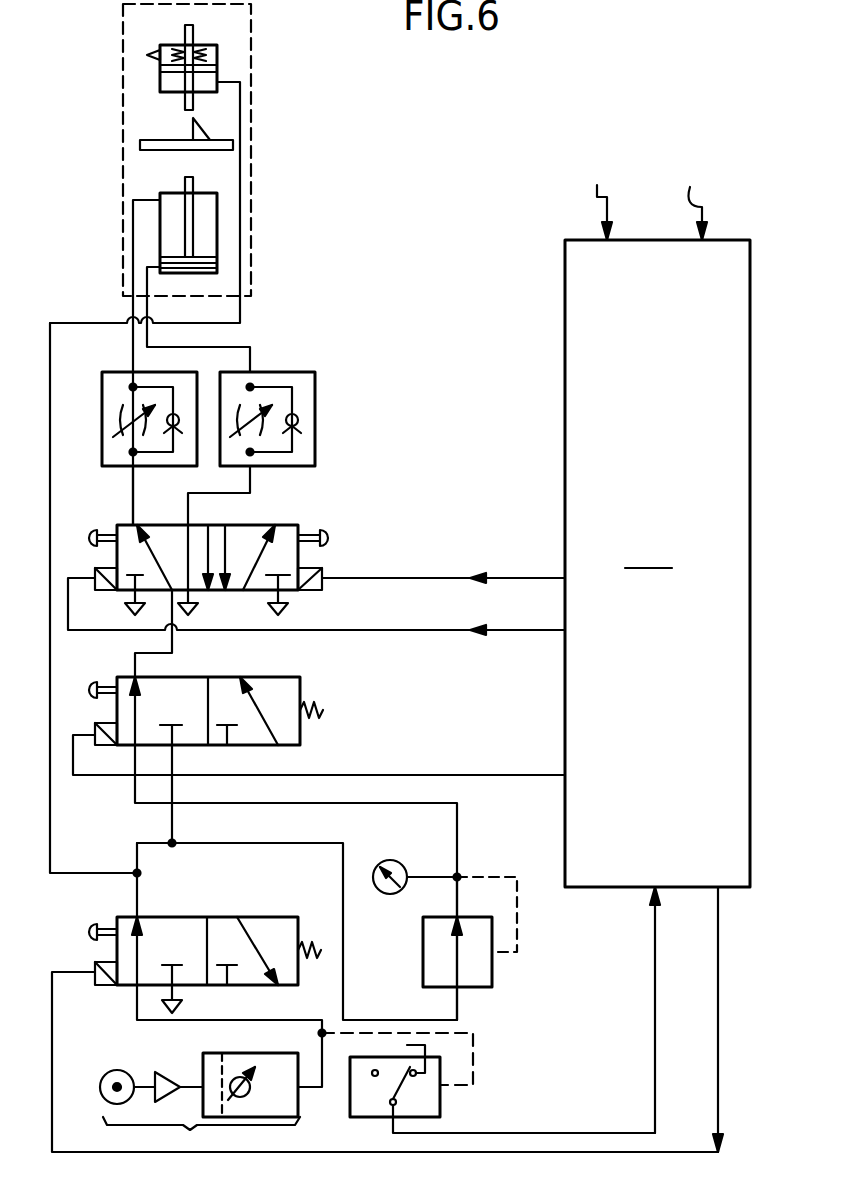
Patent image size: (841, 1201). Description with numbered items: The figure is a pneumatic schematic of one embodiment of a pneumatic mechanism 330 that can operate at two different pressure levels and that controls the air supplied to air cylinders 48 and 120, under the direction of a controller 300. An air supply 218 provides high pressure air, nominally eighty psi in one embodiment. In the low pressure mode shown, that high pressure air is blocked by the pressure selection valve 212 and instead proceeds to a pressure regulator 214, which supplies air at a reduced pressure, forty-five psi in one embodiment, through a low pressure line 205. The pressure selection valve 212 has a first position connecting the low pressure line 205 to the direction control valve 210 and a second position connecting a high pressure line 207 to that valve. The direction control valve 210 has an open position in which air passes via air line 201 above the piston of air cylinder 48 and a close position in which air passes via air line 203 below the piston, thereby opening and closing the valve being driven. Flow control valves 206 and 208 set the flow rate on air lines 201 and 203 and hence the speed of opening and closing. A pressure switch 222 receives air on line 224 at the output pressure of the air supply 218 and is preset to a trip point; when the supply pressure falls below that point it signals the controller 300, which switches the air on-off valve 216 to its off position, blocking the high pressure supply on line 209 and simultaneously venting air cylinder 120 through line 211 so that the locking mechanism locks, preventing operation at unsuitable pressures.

The air cylinder 120 is at (217, 70).
The air cylinder 48 is at (217, 218).
The flow control valve 206 is at (102, 388).
The flow control valve 208 is at (315, 388).
The air line 201 is at (133, 492).
The air line 203 is at (250, 492).
The direction control valve 210 is at (298, 555).
The pressure selection valve 212 is at (300, 740).
The line 211 is at (50, 820).
The high pressure line 207 is at (172, 822).
The low pressure line 205 is at (343, 807).
The air on-off valve 216 is at (277, 917).
The line 209 is at (212, 1020).
The pressure regulator 214 is at (492, 975).
The controller 300 is at (657, 625).
The pneumatic mechanism 330 is at (473, 193).
The air supply 218 is at (190, 1130).
The pressure switch 222 is at (440, 1105).
The line 224 is at (473, 1060).